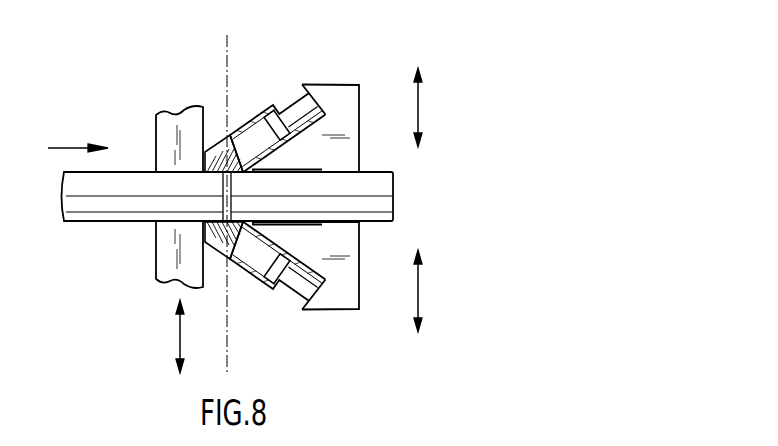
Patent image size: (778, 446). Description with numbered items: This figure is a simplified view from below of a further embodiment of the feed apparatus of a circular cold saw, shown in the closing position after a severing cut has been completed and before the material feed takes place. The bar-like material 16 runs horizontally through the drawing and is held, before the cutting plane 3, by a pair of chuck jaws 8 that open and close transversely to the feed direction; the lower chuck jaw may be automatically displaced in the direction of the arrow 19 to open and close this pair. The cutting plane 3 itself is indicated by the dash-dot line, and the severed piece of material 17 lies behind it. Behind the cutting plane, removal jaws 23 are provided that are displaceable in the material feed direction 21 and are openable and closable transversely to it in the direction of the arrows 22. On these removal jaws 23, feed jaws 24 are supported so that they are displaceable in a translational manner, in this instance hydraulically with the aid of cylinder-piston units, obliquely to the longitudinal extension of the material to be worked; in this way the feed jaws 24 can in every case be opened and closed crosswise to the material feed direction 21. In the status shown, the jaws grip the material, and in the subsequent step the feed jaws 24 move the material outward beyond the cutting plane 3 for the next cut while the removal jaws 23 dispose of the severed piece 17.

The cutting plane 3 is at (232, 45).
The chuck jaws 8 is at (173, 127).
The bar-like material 16 is at (102, 199).
The piece of material 17 is at (383, 192).
The arrow (chuck jaw displacement direction) 19 is at (180, 337).
The material feed direction 21 is at (72, 147).
The arrows (removal jaw opening/closing direction) 22 is at (418, 107).
The removal jaws 23 is at (345, 93).
The feed jaws 24 is at (215, 150).